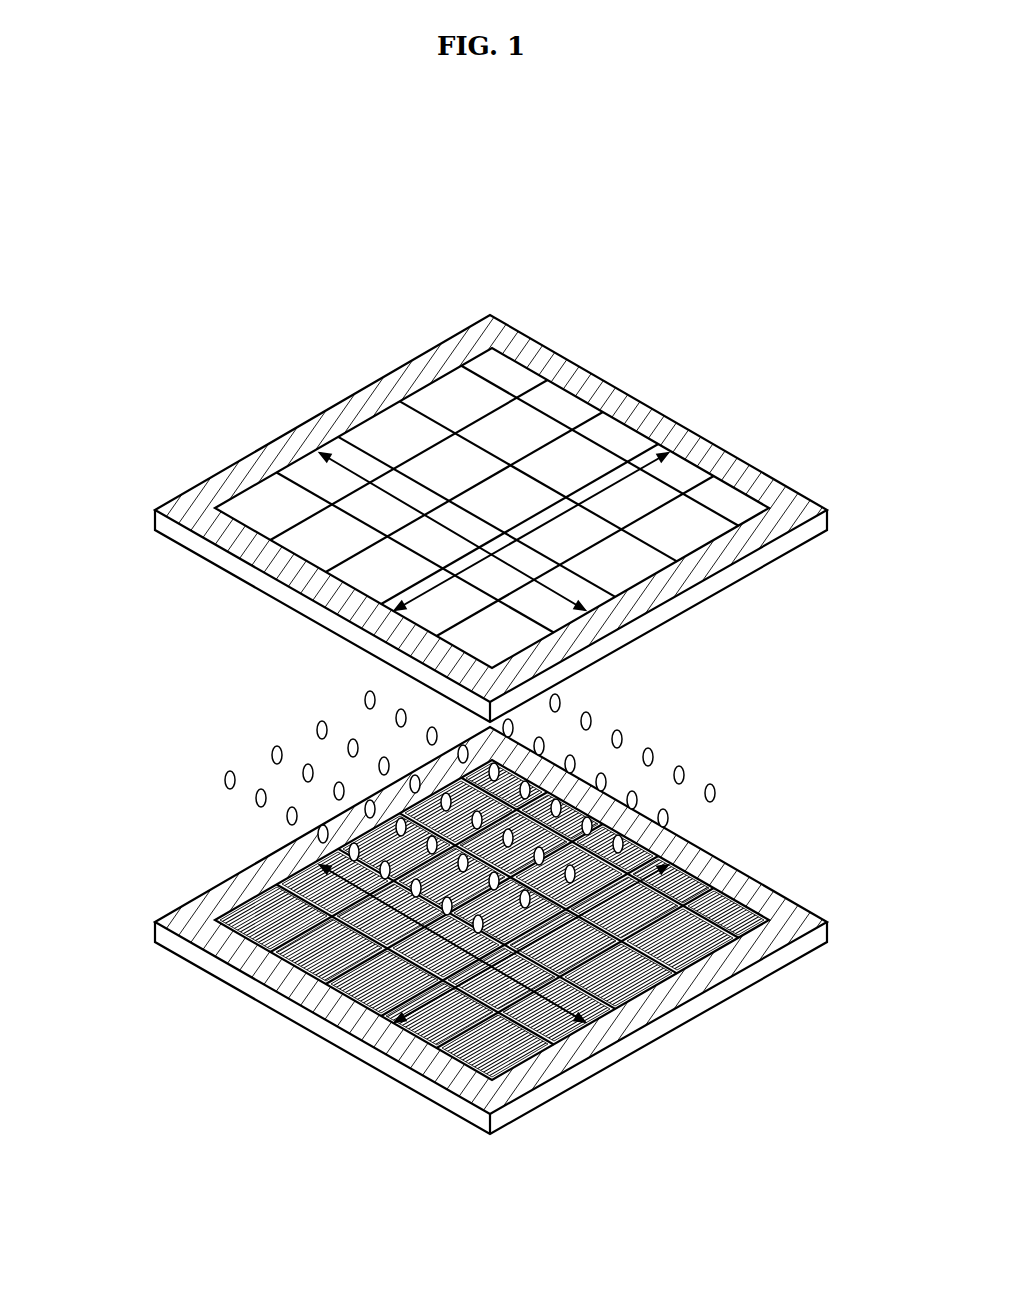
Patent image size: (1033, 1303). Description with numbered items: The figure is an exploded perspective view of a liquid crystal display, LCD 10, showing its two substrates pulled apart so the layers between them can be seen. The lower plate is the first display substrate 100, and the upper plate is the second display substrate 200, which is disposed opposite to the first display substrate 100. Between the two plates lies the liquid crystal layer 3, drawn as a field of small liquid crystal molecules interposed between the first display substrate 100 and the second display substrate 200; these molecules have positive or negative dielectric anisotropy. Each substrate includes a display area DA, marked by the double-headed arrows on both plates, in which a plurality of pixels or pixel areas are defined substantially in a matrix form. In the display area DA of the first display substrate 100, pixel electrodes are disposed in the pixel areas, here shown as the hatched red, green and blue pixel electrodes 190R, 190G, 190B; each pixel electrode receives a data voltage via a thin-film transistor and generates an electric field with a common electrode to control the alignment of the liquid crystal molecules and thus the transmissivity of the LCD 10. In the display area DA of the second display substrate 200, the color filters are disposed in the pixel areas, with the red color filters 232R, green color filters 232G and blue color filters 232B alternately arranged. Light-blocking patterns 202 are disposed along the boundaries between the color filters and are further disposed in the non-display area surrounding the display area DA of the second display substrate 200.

The liquid crystal display 10 is at (521, 254).
The second display substrate 200 is at (762, 460).
The light-blocking patterns 202 is at (582, 420).
The red color filters 232R is at (297, 468).
The green color filters 232G is at (265, 487).
The blue color filters 232B is at (235, 502).
The display area DA is at (367, 478).
The first display substrate 100 is at (783, 884).
The red light emitting element 190R is at (297, 877).
The green light emitting element 190G is at (265, 900).
The blue light emitting element 190B is at (235, 915).
The liquid crystal layer 3 is at (694, 754).